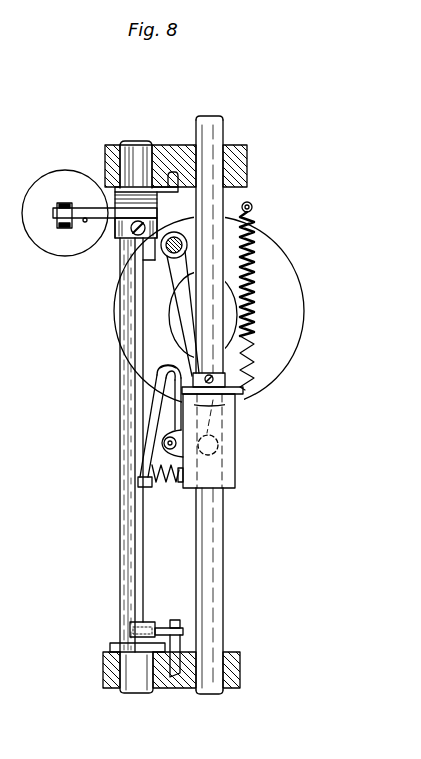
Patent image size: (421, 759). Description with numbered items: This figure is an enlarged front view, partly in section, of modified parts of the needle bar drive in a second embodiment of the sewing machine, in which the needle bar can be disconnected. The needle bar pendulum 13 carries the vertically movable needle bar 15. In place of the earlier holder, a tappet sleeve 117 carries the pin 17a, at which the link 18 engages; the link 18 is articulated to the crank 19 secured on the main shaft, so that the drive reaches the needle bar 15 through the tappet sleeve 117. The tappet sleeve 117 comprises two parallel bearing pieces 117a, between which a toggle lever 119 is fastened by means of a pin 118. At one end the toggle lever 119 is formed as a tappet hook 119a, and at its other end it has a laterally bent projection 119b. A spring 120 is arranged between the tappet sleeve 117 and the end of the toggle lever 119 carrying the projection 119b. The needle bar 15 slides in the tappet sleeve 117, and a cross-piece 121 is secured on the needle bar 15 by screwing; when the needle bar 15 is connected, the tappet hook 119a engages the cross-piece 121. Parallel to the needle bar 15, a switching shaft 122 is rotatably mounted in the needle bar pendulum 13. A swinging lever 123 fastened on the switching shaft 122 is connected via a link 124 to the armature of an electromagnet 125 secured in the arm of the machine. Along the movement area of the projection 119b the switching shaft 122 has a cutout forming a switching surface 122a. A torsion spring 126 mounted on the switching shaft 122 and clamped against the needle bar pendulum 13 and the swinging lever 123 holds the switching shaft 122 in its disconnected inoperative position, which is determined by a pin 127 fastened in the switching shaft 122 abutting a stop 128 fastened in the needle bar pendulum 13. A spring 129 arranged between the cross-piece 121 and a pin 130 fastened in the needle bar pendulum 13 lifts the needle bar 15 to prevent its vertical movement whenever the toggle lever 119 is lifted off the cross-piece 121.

The needle bar pendulum 13 is at (230, 679).
The needle bar 15 is at (212, 588).
The pin 17a is at (218, 446).
The link 18 is at (182, 280).
The crank 19 is at (281, 268).
The tappet sleeve 117 is at (228, 478).
The bearing pieces 117a is at (174, 432).
The pin 118 is at (163, 443).
The toggle lever 119 is at (160, 402).
The tappet hook 119a is at (177, 380).
The laterally bent projection 119b is at (138, 484).
The spring 120 is at (166, 478).
The cross-piece 121 is at (234, 394).
The switching shaft 122 is at (133, 547).
The switching surface 122a is at (139, 520).
The swinging lever 123 is at (117, 232).
The link 124 is at (66, 204).
The electromagnet 125 is at (48, 237).
The torsion spring 126 is at (110, 147).
The pin 127 is at (158, 627).
The stop 128 is at (175, 676).
The spring 129 is at (250, 329).
The pin 130 is at (254, 203).